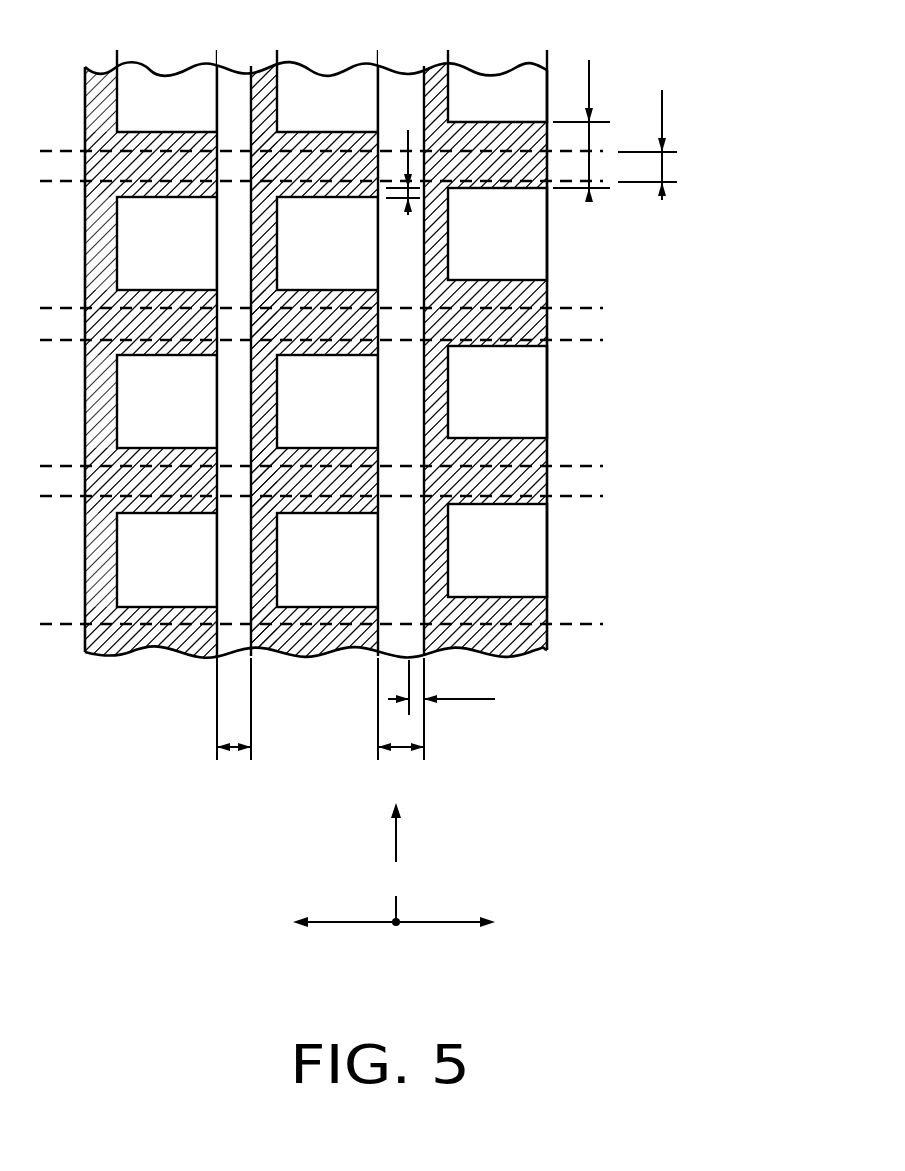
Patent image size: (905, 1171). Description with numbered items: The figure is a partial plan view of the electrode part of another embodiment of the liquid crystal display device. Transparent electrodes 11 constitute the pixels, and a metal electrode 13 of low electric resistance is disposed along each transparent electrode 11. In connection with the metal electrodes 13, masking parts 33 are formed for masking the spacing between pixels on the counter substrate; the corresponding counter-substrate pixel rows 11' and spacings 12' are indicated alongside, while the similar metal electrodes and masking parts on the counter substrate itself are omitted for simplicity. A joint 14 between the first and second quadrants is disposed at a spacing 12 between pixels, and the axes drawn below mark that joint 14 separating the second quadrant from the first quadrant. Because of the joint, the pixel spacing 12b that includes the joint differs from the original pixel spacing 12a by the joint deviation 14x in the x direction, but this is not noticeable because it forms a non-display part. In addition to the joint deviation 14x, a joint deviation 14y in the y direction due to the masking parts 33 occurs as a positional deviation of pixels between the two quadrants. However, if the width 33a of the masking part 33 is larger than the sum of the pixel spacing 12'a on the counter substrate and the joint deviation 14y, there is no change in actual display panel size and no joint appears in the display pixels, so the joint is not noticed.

The transparent electrode 11 is at (332, 304).
The spacing between pixels 12 is at (304, 335).
The metal electrode 13 is at (265, 72).
The masking part 33 is at (327, 132).
The width of the masking part 33a is at (581, 128).
The pixel spacing on the counter substrate 12'a is at (647, 143).
The joint deviation in the y direction 14y is at (400, 167).
The joint deviation in the x direction 14x is at (441, 687).
The cell region pitch 11' is at (644, 325).
The horizontal stripe region 12' is at (358, 387).
The original pixel spacing 12a is at (228, 728).
The pixel spacing including the joint 12b is at (399, 728).
The joint 14 is at (392, 869).